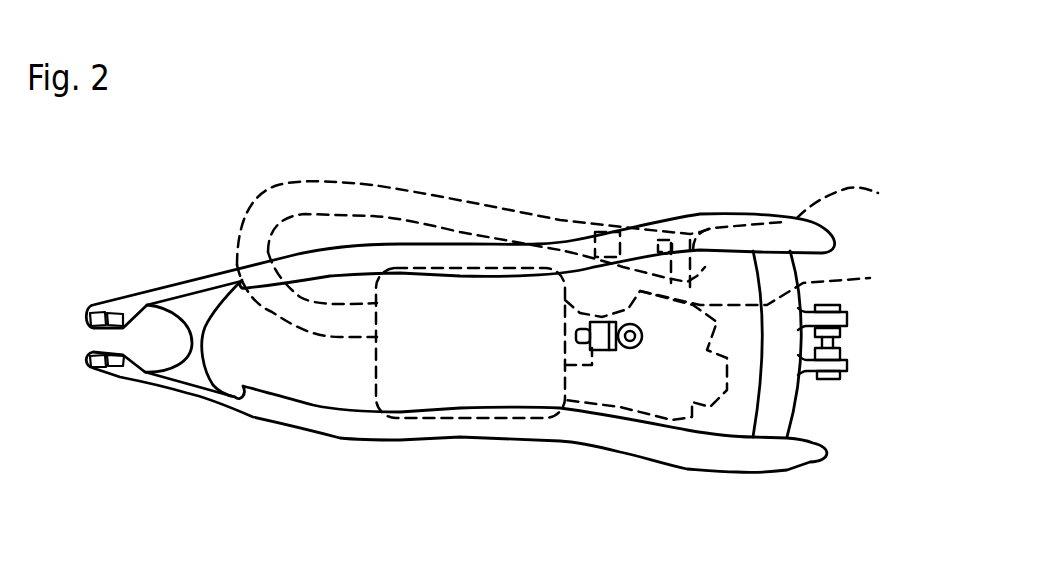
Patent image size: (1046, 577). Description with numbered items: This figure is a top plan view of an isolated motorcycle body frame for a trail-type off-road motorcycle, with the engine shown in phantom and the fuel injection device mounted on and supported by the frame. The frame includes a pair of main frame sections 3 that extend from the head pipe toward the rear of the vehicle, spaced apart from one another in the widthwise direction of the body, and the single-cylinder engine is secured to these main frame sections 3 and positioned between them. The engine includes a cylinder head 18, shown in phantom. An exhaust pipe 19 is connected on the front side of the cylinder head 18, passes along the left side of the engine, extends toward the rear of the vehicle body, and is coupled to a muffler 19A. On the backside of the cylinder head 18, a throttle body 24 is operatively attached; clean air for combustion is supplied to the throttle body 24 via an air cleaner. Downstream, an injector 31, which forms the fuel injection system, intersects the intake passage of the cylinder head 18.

The main frame sections 3 is at (203, 278).
The cylinder head 18 is at (470, 377).
The exhaust pipe 19 is at (327, 178).
The muffler 19A is at (848, 188).
The throttle body 24 is at (663, 378).
The injector 31 is at (611, 352).